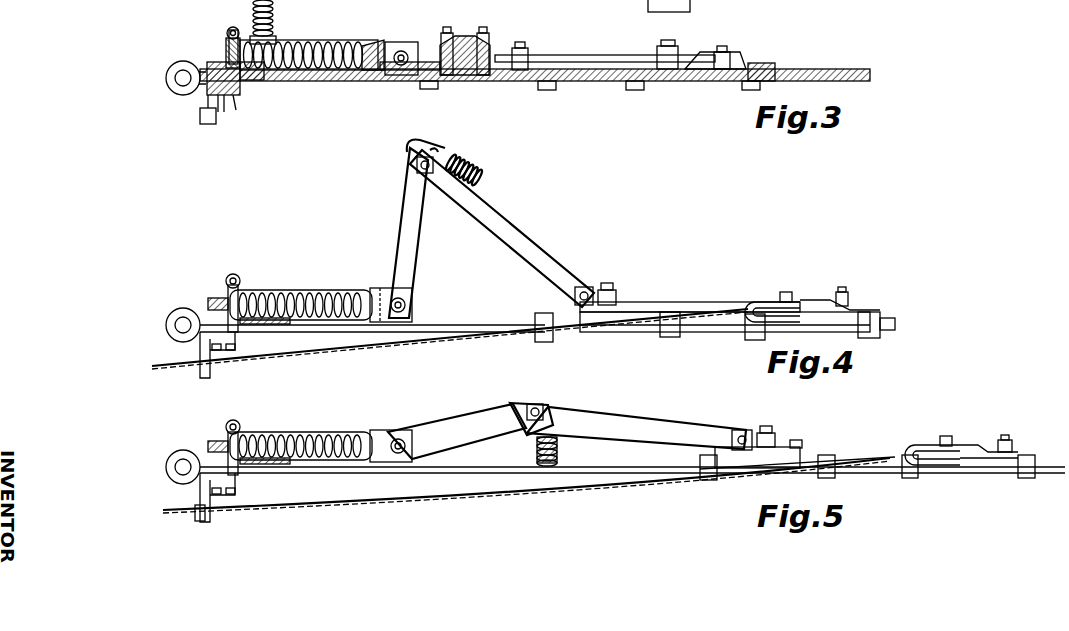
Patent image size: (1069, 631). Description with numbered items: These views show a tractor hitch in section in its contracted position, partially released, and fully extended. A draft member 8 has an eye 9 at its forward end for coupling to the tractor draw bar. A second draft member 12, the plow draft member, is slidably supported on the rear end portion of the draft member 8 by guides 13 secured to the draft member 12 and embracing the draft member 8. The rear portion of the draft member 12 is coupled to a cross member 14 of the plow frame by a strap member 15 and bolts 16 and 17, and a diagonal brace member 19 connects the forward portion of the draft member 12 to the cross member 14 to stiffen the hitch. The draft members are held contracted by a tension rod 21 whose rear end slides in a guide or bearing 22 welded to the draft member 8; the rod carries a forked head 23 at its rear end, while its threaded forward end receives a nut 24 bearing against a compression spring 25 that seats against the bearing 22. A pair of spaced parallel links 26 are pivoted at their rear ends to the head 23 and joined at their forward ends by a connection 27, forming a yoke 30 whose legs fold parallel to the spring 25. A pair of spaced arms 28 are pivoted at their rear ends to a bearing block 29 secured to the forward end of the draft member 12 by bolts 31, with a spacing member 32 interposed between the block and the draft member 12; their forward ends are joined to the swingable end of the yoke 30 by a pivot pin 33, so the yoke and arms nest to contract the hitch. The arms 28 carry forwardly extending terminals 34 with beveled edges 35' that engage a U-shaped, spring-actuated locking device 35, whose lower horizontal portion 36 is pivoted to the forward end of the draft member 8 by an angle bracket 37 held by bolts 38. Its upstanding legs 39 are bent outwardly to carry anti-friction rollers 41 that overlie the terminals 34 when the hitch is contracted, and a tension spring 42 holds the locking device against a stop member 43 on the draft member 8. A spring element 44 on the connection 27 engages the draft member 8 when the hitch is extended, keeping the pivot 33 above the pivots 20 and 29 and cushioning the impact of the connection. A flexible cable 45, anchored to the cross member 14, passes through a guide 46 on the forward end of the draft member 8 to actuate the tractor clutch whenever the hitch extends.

In FIG. 3, the draft member 8 is at (318, 81).
In FIG. 4, the draft member 8 is at (450, 325).
In FIG. 5, the draft member 8 is at (665, 474).
In FIG. 3, the eye 9 is at (166, 78).
In FIG. 4, the eye 9 is at (166, 326).
In FIG. 5, the eye 9 is at (166, 467).
In FIG. 3, the second draft member 12 is at (764, 63).
In FIG. 4, the second draft member 12 is at (535, 316).
In FIG. 5, the second draft member 12 is at (833, 455).
In FIG. 3, the guides 13 is at (428, 89).
In FIG. 4, the guides 13 is at (545, 312).
In FIG. 5, the guides 13 is at (705, 480).
In FIG. 5, the cross member 14 is at (937, 465).
In FIG. 3, the strap member 15 is at (700, 52).
In FIG. 4, the strap member 15 is at (806, 300).
In FIG. 5, the strap member 15 is at (970, 446).
In FIG. 3, the bolt 16 is at (664, 46).
In FIG. 3, the bolt 17 is at (720, 47).
In FIG. 4, the bolt 17 is at (841, 288).
In FIG. 5, the bolt 17 is at (1004, 440).
In FIG. 4, the diagonal brace member 19 is at (692, 302).
In FIG. 3, the pivot 20 is at (402, 52).
In FIG. 4, the pivot 20 is at (406, 303).
In FIG. 5, the pivot 20 is at (399, 439).
In FIG. 3, the tension rod 21 is at (335, 42).
In FIG. 4, the tension rod 21 is at (212, 305).
In FIG. 5, the tension rod 21 is at (212, 447).
In FIG. 3, the guide or bearing 22 is at (376, 40).
In FIG. 4, the guide or bearing 22 is at (372, 292).
In FIG. 5, the guide or bearing 22 is at (378, 432).
In FIG. 3, the forked head 23 is at (392, 76).
In FIG. 4, the forked head 23 is at (390, 288).
In FIG. 3, the nut 24 is at (226, 45).
In FIG. 5, the nut 24 is at (226, 440).
In FIG. 4, the compression spring 25 is at (298, 292).
In FIG. 5, the compression spring 25 is at (322, 432).
In FIG. 4, the links 26 is at (412, 196).
In FIG. 5, the links 26 is at (441, 432).
In FIG. 3, the connection 27 is at (270, 38).
In FIG. 4, the arms 28 is at (525, 232).
In FIG. 5, the arms 28 is at (632, 420).
In FIG. 4, the bearing block 29 is at (585, 287).
In FIG. 5, the bearing block 29 is at (743, 430).
In FIG. 4, the yoke 30 is at (394, 214).
In FIG. 5, the yoke 30 is at (471, 412).
In FIG. 3, the bolts 31 is at (446, 33).
In FIG. 4, the bolts 31 is at (607, 283).
In FIG. 5, the bolts 31 is at (766, 426).
In FIG. 3, the spacing member 32 is at (497, 81).
In FIG. 4, the spacing member 32 is at (600, 332).
In FIG. 5, the spacing member 32 is at (805, 448).
In FIG. 4, the pivot pin or bolt 33 is at (432, 160).
In FIG. 5, the pivot pin or bolt 33 is at (535, 404).
In FIG. 4, the terminals 34 is at (420, 144).
In FIG. 4, the locking device 35 is at (393, 150).
In FIG. 4, the beveled edges 35' is at (221, 255).
In FIG. 5, the beveled edges 35' is at (210, 405).
In FIG. 3, the lower horizontal portion 36 is at (238, 98).
In FIG. 3, the angle bracket 37 is at (207, 92).
In FIG. 4, the angle bracket 37 is at (200, 372).
In FIG. 5, the angle bracket 37 is at (200, 492).
In FIG. 3, the bolts 38 is at (224, 100).
In FIG. 4, the bolts 38 is at (212, 348).
In FIG. 5, the bolts 38 is at (230, 494).
In FIG. 3, the upstanding spaced legs 39 is at (230, 38).
In FIG. 4, the upstanding spaced legs 39 is at (228, 290).
In FIG. 5, the upstanding spaced legs 39 is at (228, 428).
In FIG. 3, the anti-friction rollers 41 is at (231, 27).
In FIG. 4, the anti-friction rollers 41 is at (241, 277).
In FIG. 5, the anti-friction rollers 41 is at (240, 420).
In FIG. 4, the tension spring 42 is at (255, 335).
In FIG. 5, the tension spring 42 is at (256, 466).
In FIG. 3, the stop member 43 is at (258, 81).
In FIG. 5, the stop member 43 is at (246, 480).
In FIG. 4, the spring element 44 is at (474, 172).
In FIG. 5, the spring element 44 is at (560, 458).
In FIG. 5, the flexible element 45 is at (472, 503).
In FIG. 3, the guide 46 is at (203, 120).
In FIG. 5, the guide 46 is at (197, 513).